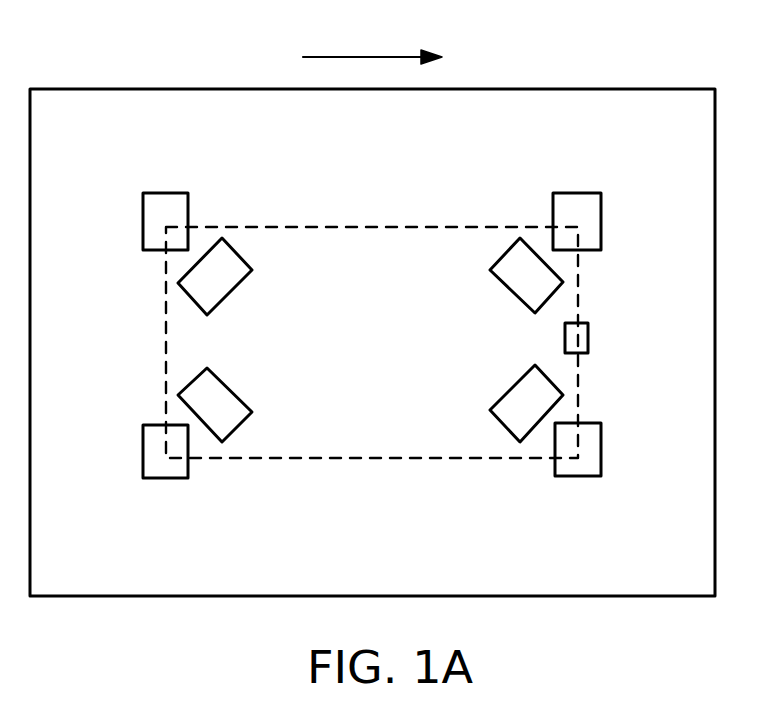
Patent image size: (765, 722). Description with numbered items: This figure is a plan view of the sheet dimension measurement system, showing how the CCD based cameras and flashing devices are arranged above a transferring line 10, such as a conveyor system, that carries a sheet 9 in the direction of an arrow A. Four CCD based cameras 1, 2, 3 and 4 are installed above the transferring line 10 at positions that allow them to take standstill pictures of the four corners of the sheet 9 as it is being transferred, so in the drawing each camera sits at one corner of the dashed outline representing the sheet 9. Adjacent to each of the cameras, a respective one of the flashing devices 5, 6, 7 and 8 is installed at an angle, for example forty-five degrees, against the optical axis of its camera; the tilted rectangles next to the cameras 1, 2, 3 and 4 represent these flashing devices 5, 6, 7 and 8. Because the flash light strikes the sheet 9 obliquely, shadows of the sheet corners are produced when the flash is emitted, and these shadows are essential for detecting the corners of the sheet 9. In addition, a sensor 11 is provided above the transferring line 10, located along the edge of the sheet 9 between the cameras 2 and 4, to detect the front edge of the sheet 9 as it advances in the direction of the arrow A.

The CCD based camera 1 is at (172, 193).
The CCD based camera 2 is at (586, 193).
The CCD based camera 3 is at (170, 478).
The CCD based camera 4 is at (583, 476).
The flashing device 5 is at (240, 281).
The flashing device 6 is at (233, 388).
The flashing device 7 is at (513, 295).
The flashing device 8 is at (500, 402).
The sheet 9 is at (382, 460).
The transferring line 10 is at (153, 89).
The sensor 11 is at (588, 338).
The arrow A is at (365, 55).